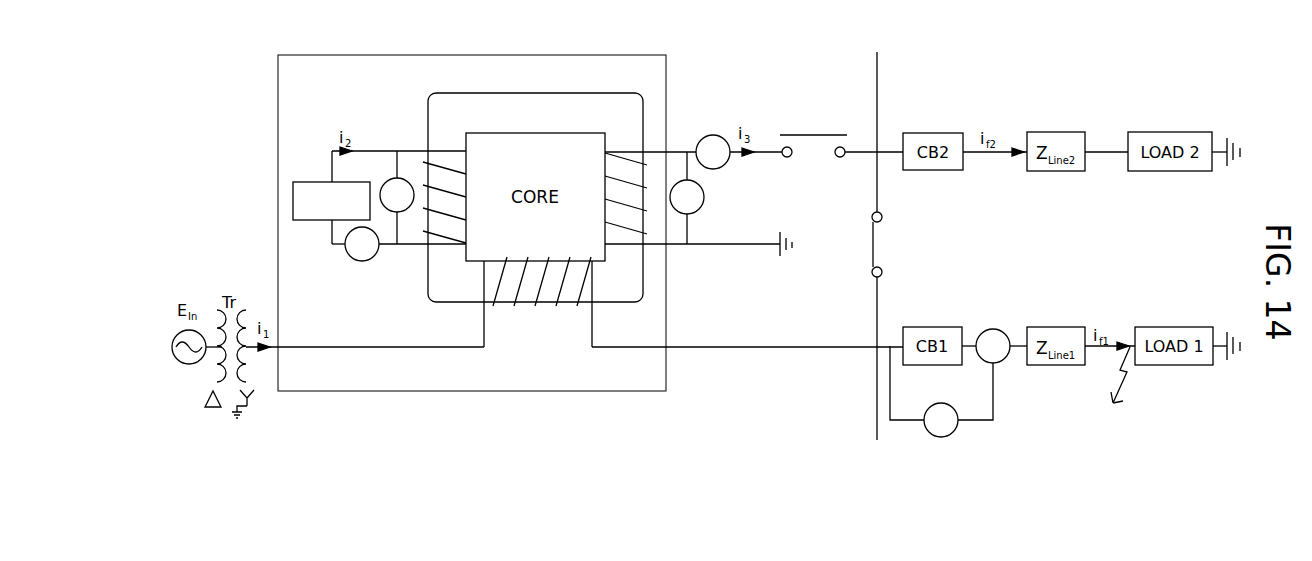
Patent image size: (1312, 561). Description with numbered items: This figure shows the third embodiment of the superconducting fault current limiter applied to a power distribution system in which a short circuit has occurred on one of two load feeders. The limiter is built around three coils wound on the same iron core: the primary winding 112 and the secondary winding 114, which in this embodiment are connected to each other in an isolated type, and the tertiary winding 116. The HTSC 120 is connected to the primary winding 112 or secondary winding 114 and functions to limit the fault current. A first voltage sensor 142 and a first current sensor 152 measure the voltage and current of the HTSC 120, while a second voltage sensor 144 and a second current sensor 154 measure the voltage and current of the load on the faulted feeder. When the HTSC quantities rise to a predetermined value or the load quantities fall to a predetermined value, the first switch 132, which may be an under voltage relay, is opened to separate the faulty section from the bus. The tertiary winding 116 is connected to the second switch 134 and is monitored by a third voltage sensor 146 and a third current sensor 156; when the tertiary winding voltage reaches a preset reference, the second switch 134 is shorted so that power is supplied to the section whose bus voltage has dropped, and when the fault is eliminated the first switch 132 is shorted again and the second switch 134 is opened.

The primary winding 112 is at (556, 306).
The secondary winding 114 is at (447, 167).
The tertiary winding 116 is at (623, 152).
The HTSC 120 is at (293, 200).
The first switch 132 is at (899, 245).
The second switch 134 is at (776, 134).
The first voltage sensor 142 is at (389, 181).
The second voltage sensor 144 is at (941, 437).
The third voltage sensor 146 is at (704, 197).
The first current sensor 152 is at (363, 262).
The second current sensor 154 is at (1005, 358).
The third current sensor 156 is at (713, 135).